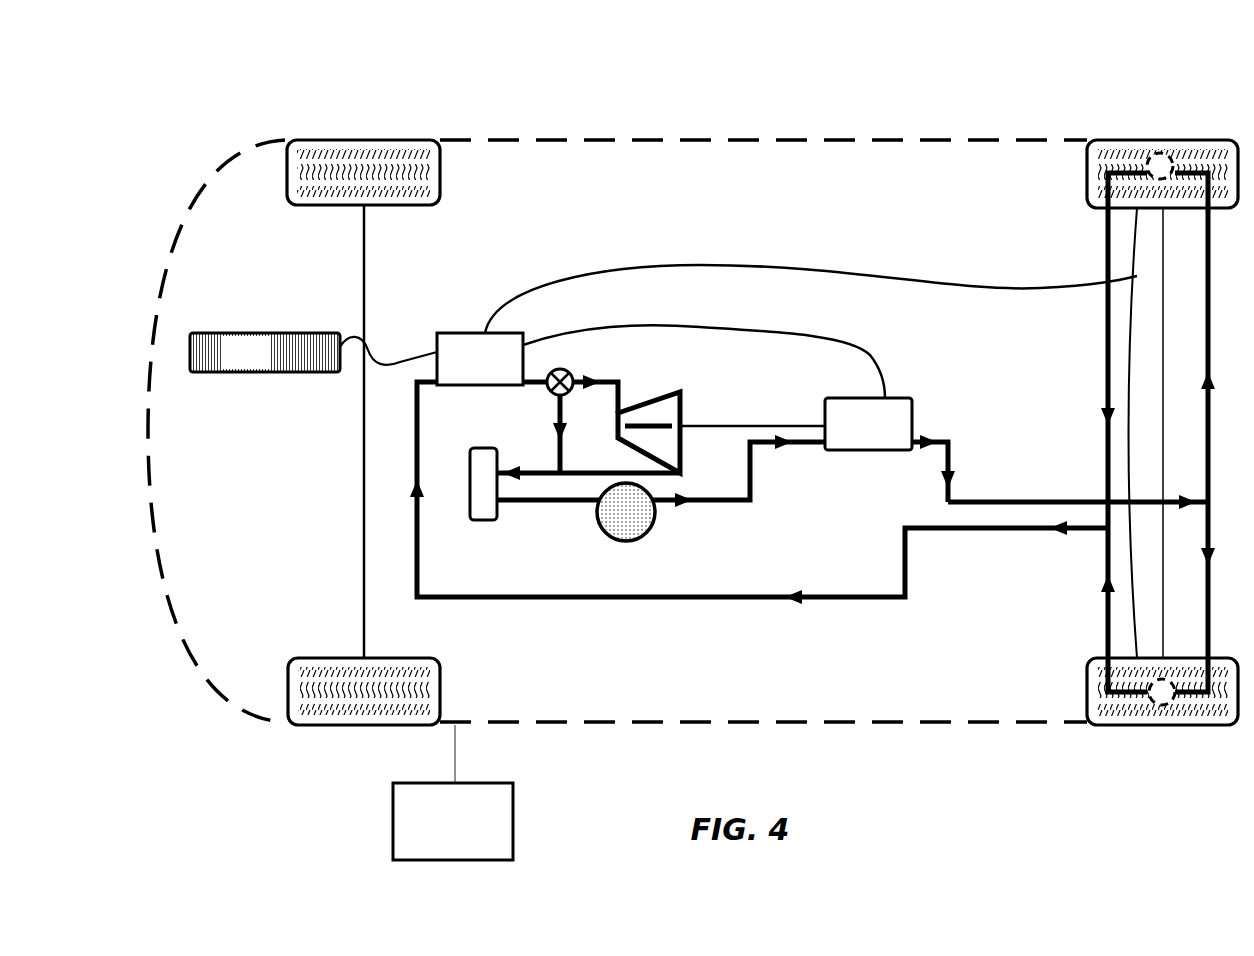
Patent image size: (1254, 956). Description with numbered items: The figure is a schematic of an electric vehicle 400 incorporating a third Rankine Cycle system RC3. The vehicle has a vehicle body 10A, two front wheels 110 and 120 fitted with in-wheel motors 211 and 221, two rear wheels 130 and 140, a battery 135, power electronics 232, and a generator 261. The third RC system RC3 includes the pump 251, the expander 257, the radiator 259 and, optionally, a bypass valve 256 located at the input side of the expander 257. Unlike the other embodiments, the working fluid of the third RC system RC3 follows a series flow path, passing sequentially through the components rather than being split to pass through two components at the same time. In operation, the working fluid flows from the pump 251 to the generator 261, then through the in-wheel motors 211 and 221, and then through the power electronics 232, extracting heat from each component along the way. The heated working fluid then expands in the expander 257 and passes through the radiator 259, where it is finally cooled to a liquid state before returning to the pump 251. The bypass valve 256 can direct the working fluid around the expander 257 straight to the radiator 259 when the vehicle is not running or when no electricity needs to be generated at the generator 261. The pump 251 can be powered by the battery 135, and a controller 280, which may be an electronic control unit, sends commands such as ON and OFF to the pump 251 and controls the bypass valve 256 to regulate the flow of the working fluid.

The vehicle body 10A is at (620, 134).
The front wheel 110 is at (1107, 152).
The front wheel 120 is at (1232, 722).
The rear wheel 130 is at (281, 157).
The rear wheel 140 is at (287, 693).
The battery 135 is at (313, 352).
The in-wheel motor 211 is at (1157, 152).
The in-wheel motor 221 is at (1162, 706).
The power electronics 232 is at (787, 331).
The pump 251 is at (661, 488).
The bypass valve 256 is at (567, 373).
The expander 257 is at (657, 398).
The radiator 259 is at (468, 462).
The generator 261 is at (890, 450).
The controller 280 is at (453, 792).
The electric vehicle 400 is at (1183, 94).
The third Rankine Cycle system RC3 is at (974, 448).